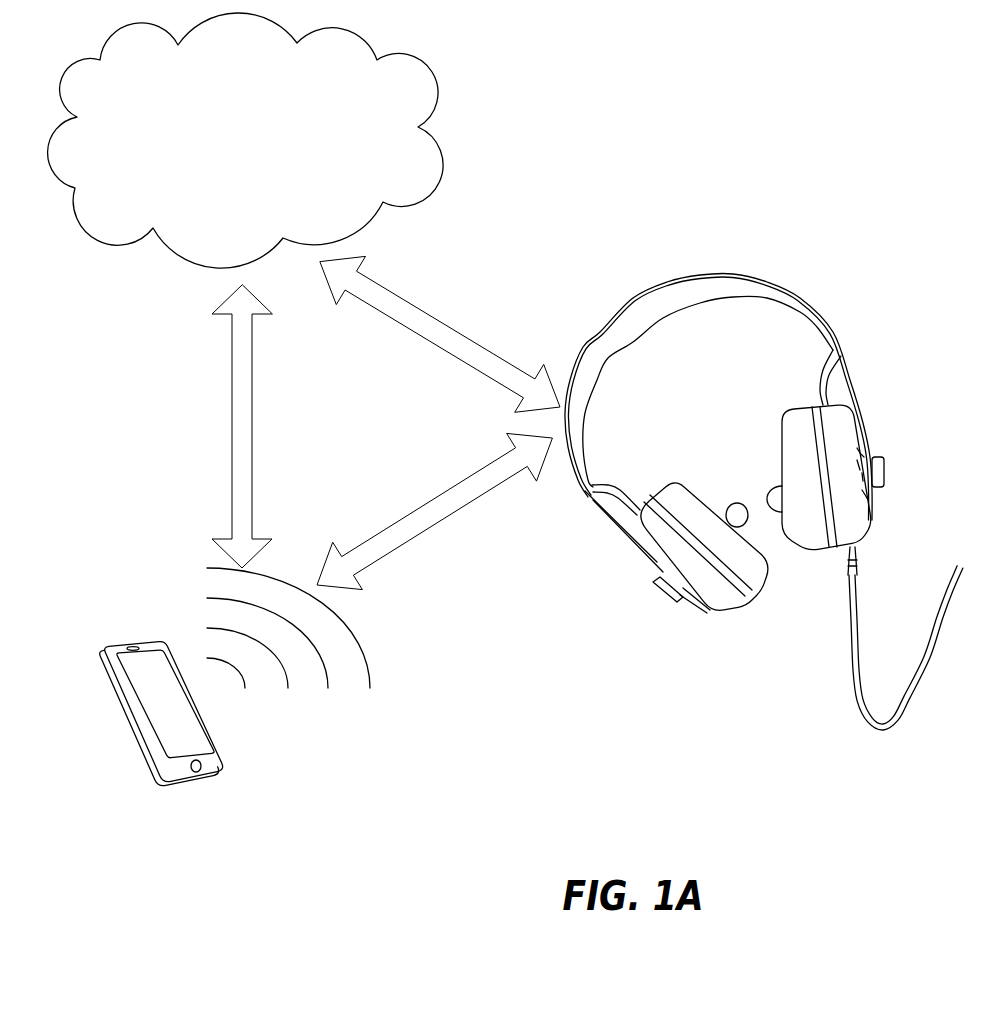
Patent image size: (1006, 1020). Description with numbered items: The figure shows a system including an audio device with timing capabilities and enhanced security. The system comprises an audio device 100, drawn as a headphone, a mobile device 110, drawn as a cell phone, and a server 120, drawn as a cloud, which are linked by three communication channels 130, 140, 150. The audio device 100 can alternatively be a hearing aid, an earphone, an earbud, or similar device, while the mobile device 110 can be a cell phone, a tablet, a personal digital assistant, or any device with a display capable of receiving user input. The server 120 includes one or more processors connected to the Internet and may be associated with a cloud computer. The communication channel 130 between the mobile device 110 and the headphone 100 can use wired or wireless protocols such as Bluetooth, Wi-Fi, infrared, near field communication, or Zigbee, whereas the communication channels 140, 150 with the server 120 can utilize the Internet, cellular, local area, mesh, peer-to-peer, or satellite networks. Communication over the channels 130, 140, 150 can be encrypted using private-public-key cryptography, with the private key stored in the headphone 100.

The audio device 100 is at (705, 275).
The mobile device 110 is at (228, 773).
The server 120 is at (223, 180).
The communication channel 130 is at (413, 537).
The communication channel 140 is at (453, 328).
The communication channel 150 is at (232, 462).